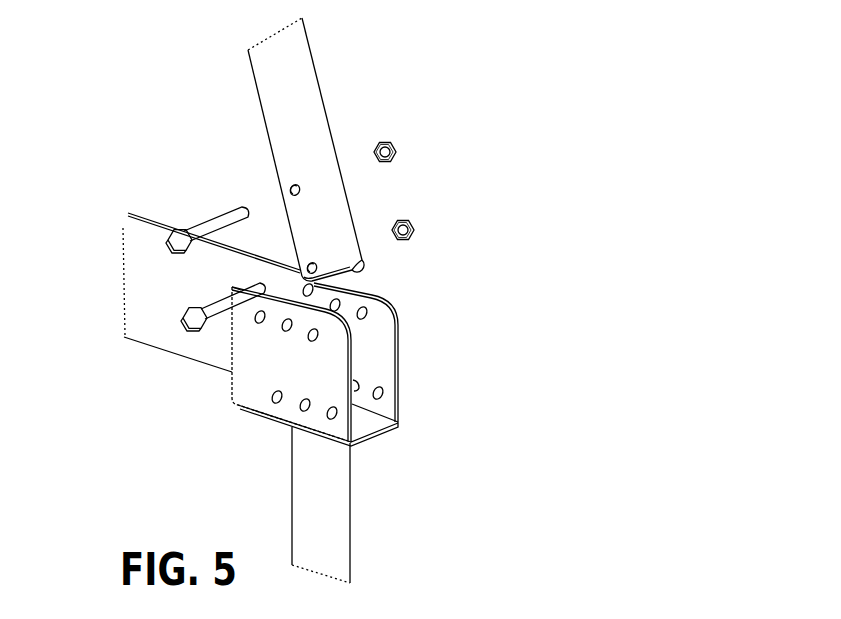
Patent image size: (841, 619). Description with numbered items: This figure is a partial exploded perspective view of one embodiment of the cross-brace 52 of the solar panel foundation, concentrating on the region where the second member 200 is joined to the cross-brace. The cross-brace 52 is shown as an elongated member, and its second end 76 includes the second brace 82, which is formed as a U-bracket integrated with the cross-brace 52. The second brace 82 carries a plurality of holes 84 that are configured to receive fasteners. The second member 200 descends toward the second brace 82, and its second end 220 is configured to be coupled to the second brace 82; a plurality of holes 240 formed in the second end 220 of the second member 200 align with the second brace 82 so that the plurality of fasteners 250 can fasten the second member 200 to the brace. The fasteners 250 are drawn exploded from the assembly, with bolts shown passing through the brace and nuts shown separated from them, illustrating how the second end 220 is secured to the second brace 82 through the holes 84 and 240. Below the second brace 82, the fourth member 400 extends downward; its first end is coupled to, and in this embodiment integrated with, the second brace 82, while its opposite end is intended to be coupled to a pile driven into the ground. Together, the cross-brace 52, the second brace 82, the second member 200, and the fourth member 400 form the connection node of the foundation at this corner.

The cross-brace 52 is at (142, 292).
The second end of the cross-brace 76 is at (333, 365).
The second brace 82 is at (388, 365).
The plurality of holes 84 is at (285, 331).
The second member 200 is at (327, 125).
The second end of the second member 220 is at (372, 212).
The plurality of holes 240 is at (309, 263).
The plurality of fasteners 250 is at (392, 238).
The fourth member 400 is at (337, 550).